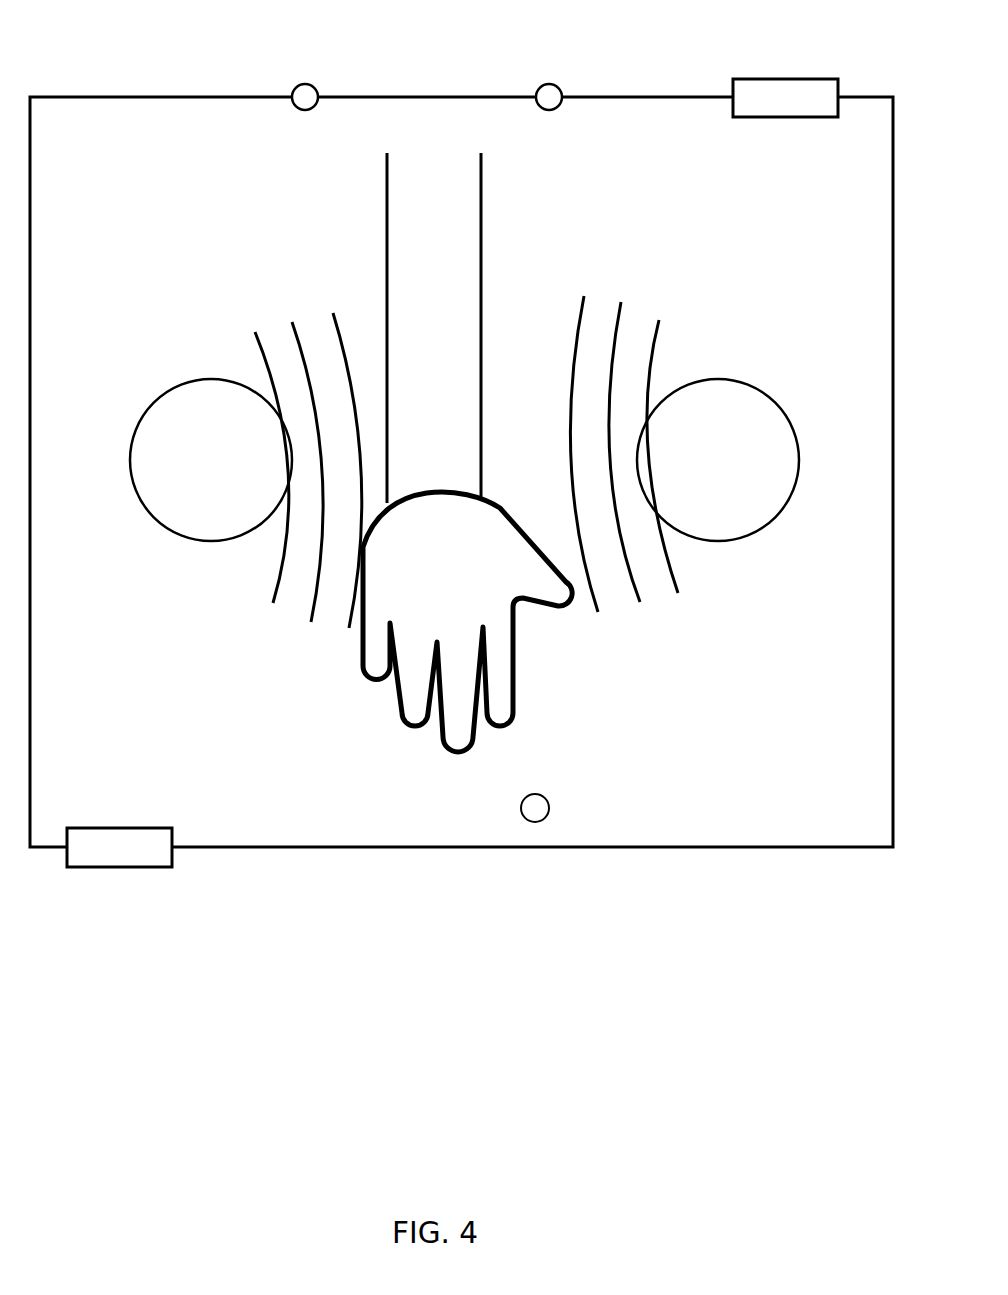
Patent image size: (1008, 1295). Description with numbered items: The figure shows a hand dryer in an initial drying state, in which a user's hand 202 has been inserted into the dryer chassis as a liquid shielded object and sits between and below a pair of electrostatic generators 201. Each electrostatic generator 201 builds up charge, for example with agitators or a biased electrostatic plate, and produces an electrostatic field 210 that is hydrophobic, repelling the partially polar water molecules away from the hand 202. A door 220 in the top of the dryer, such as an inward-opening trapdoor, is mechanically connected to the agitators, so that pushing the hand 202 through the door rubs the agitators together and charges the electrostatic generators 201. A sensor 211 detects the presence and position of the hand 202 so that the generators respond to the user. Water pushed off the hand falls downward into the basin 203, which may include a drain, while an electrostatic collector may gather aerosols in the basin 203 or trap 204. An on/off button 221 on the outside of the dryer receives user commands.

The electrostatic generator 201 is at (187, 380).
The hand 202 is at (502, 508).
The basin 203 is at (732, 846).
The trap 204 is at (155, 828).
The electrostatic field 210 is at (276, 297).
The sensor 211 is at (530, 793).
The door 220 is at (384, 96).
The on/off button 221 is at (779, 78).